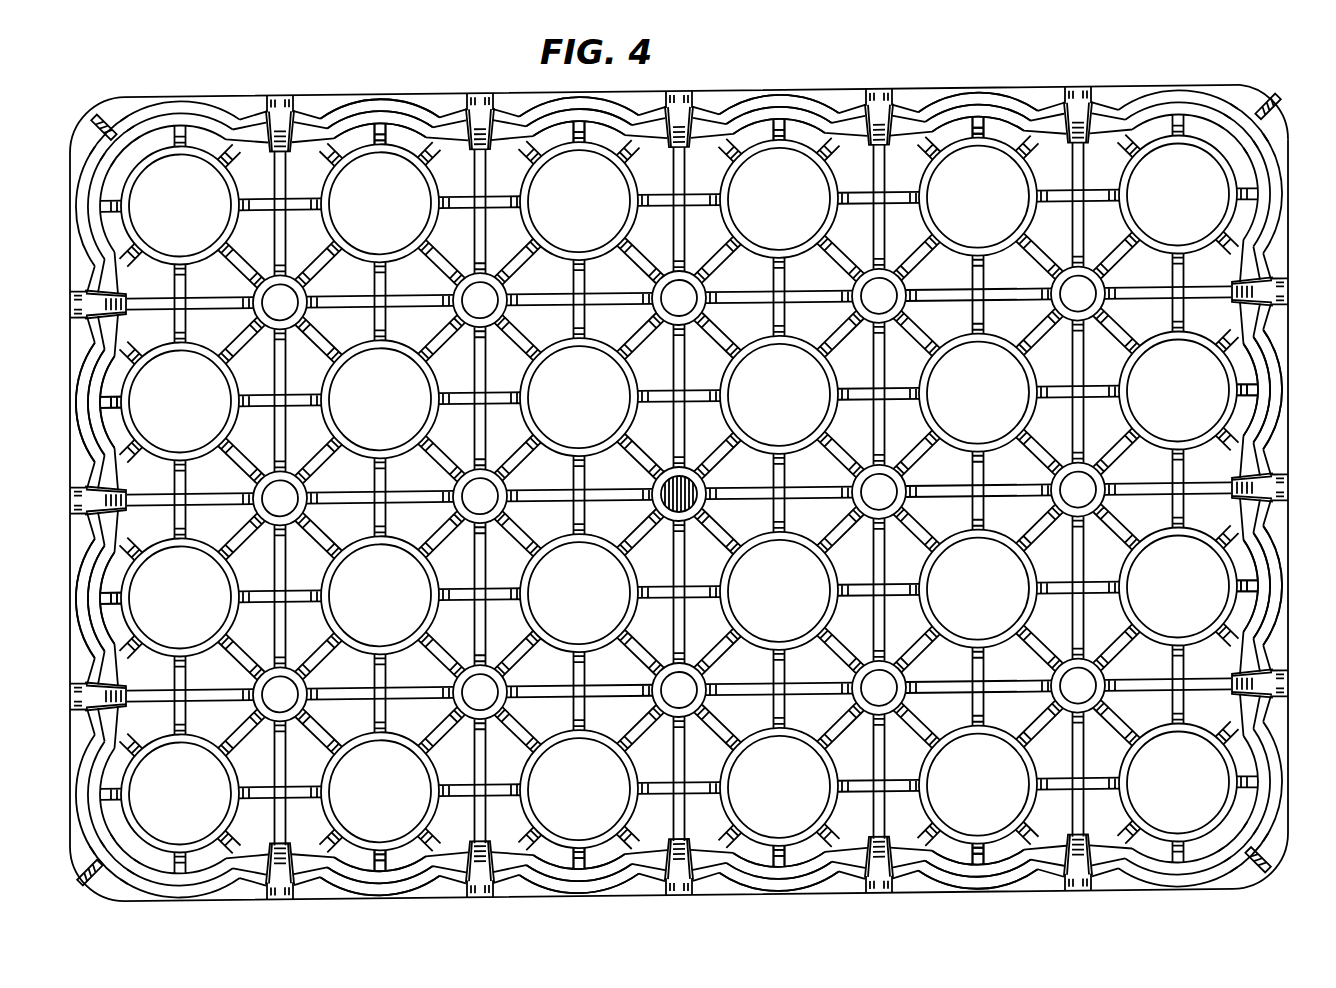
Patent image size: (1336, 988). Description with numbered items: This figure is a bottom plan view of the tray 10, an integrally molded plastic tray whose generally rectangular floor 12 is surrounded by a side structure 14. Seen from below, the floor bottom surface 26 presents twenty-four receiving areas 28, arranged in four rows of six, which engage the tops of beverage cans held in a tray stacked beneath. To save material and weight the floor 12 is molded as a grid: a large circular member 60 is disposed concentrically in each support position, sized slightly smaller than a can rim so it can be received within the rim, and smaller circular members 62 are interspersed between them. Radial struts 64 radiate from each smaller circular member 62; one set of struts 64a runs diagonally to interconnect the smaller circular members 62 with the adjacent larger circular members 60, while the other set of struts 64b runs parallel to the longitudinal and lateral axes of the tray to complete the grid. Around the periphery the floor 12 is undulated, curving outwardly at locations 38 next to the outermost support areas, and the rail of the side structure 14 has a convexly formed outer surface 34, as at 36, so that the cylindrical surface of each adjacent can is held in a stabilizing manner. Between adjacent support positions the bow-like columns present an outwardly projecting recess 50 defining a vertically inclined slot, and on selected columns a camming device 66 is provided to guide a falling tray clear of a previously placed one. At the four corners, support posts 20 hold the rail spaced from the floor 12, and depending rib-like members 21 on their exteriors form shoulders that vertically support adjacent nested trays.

The tray 10 is at (1146, 74).
The floor 12 is at (1220, 266).
The side structure 14 is at (834, 93).
The support posts 20 is at (1284, 116).
The rib-like members 21 is at (1268, 103).
The floor bottom surface 26 is at (1169, 313).
The receiving areas 28 is at (941, 208).
The outer surface 34 is at (1042, 101).
The convex portion 36 is at (940, 100).
The outwardly curving locations 38 is at (1283, 421).
The recess 50 is at (708, 152).
The circular members 60 is at (531, 621).
The smaller circular members 62 is at (488, 342).
The radial struts 64 is at (518, 535).
The radial struts (first set) 64a is at (515, 458).
The radial struts (second set) 64b is at (477, 453).
The camming device 66 is at (1268, 690).